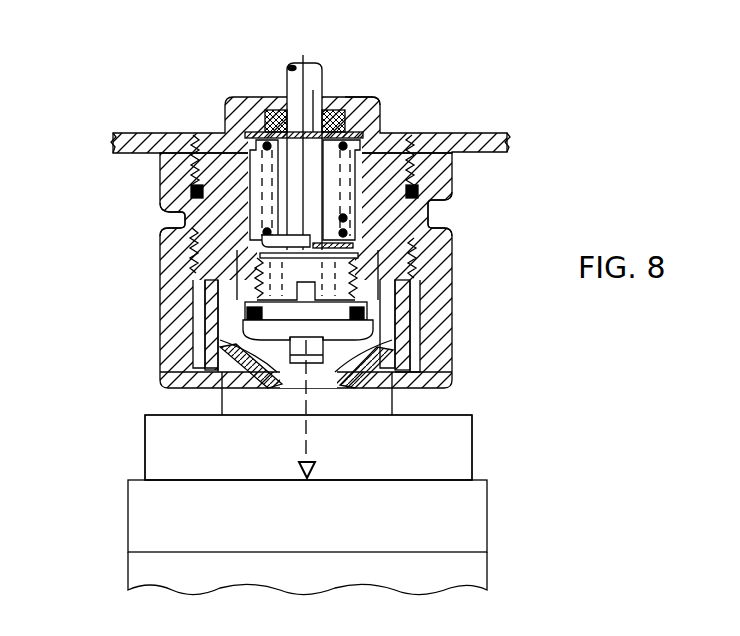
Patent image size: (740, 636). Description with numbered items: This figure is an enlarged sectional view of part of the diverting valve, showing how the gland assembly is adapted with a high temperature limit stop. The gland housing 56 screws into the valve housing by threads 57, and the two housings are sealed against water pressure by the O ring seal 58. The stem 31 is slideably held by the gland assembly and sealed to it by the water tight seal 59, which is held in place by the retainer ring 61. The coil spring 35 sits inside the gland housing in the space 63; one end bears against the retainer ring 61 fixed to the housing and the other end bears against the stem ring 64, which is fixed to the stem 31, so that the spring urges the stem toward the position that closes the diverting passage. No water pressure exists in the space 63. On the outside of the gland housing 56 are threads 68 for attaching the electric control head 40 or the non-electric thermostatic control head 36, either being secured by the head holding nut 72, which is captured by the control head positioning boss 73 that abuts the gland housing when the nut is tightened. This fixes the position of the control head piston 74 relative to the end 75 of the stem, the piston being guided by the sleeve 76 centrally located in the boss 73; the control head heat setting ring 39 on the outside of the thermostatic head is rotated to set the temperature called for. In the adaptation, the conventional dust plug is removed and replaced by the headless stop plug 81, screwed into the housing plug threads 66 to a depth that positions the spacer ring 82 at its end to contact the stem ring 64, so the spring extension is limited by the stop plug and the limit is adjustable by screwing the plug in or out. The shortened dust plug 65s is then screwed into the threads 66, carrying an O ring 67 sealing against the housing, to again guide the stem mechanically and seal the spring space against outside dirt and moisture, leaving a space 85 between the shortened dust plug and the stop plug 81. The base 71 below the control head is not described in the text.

The stem 31 is at (323, 80).
The coil spring 35 is at (347, 148).
The non-electric thermostatic control head 36 is at (488, 453).
The electric control head 40 is at (492, 451).
The control head heat setting ring 39 is at (128, 522).
The gland housing 56 is at (249, 96).
The threads 57 is at (211, 168).
The O ring seal 58 is at (190, 192).
The water tight seal 59 is at (342, 97).
The retainer ring 61 is at (372, 130).
The space 63 is at (288, 128).
The stem ring 64 is at (272, 236).
The shortened dust plug 65s is at (400, 352).
The threads 66 is at (188, 232).
The O ring 67 is at (398, 318).
The threads 68 is at (185, 252).
The lower block 71 is at (128, 572).
The head holding nut 72 is at (160, 275).
The control head positioning boss 73 is at (412, 362).
The control head piston 74 is at (200, 333).
The end of the stem 75 is at (356, 380).
The sleeve 76 is at (200, 362).
The headless stop plug 81 is at (353, 272).
The spacer ring 82 is at (432, 220).
The space 85 is at (257, 297).